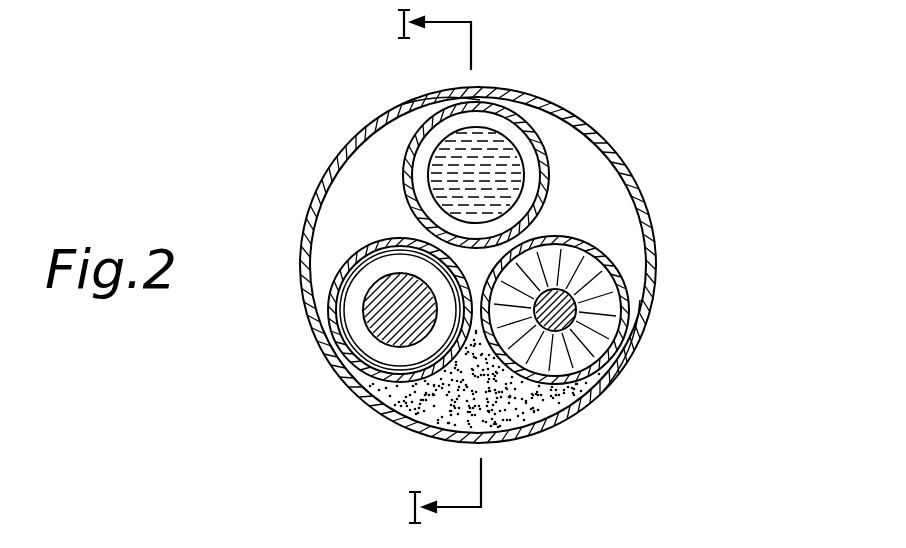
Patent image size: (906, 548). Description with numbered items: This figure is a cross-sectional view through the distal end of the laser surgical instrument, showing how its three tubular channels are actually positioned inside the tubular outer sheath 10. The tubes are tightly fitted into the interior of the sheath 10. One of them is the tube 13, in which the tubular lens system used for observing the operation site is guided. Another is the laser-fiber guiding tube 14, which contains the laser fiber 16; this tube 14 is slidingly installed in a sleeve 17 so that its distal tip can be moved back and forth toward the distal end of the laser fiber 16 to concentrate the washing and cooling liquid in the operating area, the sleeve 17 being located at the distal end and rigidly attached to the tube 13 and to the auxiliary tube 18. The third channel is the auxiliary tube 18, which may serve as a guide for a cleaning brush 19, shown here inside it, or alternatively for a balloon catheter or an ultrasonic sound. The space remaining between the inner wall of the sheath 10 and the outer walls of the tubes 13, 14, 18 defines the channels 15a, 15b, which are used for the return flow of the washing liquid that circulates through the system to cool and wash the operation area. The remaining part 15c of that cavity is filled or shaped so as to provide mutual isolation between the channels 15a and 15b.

The tubular outer sheath 10 is at (575, 115).
The tube 13 is at (523, 98).
The laser-fiber guiding tube 14 is at (396, 392).
The channel 15a is at (355, 194).
The channel 15b is at (595, 192).
The remaining part of the cavity 15c is at (520, 403).
The laser fiber 16 is at (380, 337).
The sleeve 17 is at (323, 290).
The auxiliary tube 18 is at (620, 272).
The cleaning brush 19 is at (593, 327).